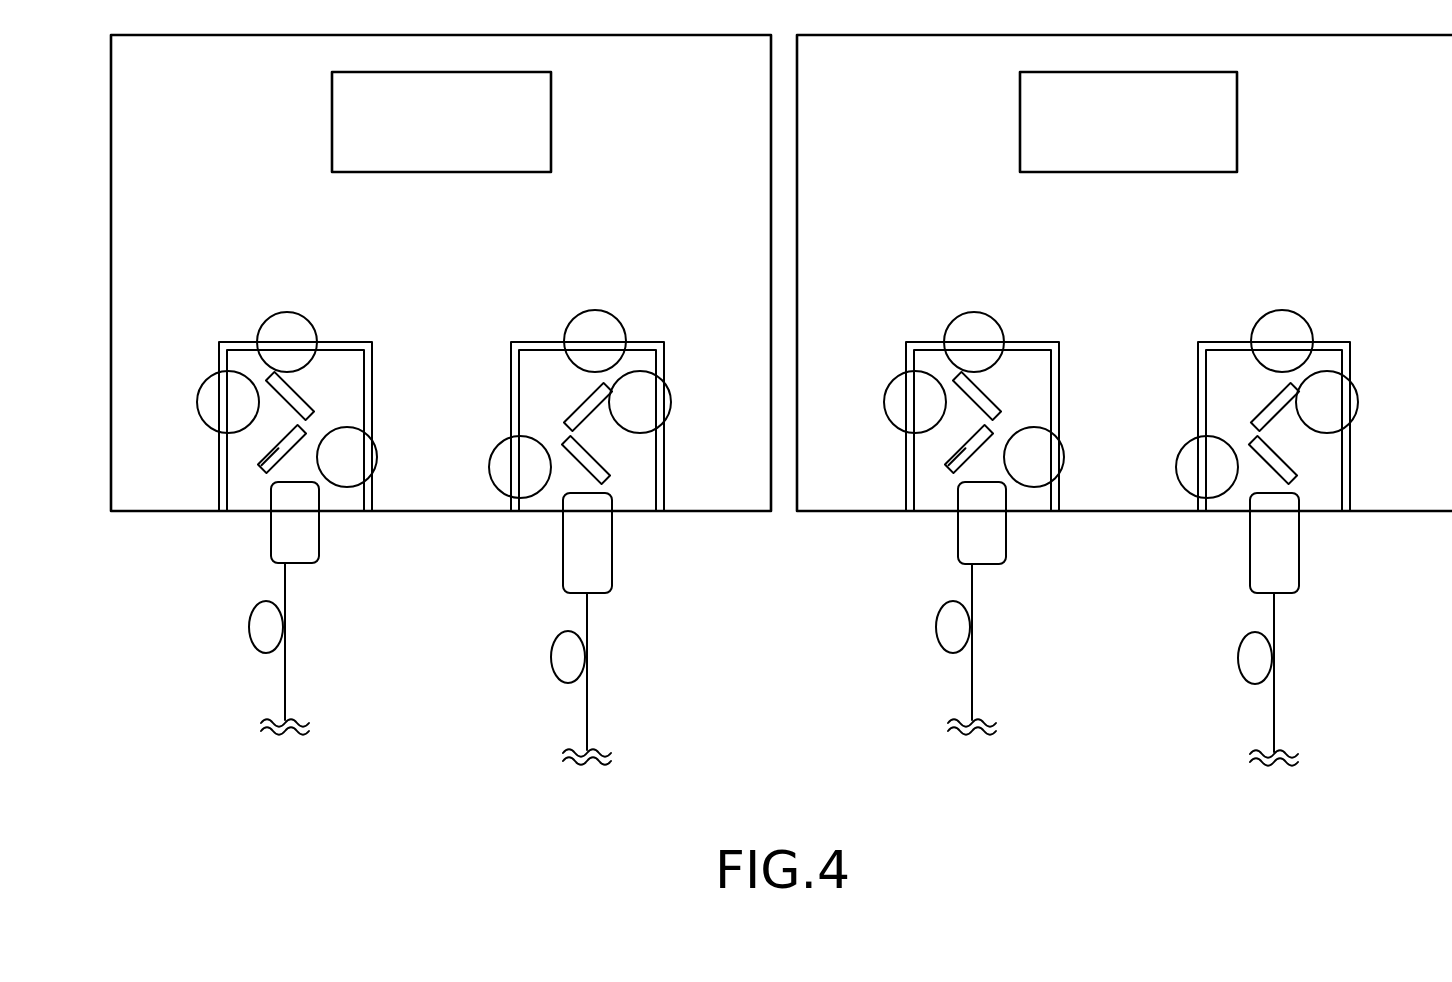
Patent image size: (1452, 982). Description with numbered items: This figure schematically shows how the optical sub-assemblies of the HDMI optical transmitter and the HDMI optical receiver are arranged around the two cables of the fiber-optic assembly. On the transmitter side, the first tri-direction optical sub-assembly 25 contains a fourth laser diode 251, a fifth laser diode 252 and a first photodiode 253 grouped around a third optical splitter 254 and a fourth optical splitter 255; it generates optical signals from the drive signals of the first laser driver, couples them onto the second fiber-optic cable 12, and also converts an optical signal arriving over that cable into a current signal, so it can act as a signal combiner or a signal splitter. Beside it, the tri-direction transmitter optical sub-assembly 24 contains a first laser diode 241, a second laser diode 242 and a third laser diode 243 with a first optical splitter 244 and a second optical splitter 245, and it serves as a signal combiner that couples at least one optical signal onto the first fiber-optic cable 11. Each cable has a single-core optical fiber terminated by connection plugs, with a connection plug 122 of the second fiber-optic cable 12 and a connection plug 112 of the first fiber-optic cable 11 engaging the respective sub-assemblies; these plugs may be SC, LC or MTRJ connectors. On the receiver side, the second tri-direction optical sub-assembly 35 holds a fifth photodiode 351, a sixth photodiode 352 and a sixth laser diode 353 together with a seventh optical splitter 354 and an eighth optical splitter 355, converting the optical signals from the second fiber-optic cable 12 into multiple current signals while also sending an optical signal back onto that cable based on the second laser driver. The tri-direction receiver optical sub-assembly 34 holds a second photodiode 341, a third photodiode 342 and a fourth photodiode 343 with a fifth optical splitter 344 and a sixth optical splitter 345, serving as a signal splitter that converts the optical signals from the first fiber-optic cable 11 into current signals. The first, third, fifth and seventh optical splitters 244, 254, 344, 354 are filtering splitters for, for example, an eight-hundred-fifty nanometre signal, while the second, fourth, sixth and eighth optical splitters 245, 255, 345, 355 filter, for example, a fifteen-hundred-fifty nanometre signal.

The first tri-direction optical sub-assembly 25 is at (209, 321).
The fourth laser diode 251 is at (308, 321).
The fifth laser diode 252 is at (368, 436).
The first photodiode 253 is at (198, 402).
The third optical splitter 254 is at (267, 465).
The fourth optical splitter 255 is at (288, 395).
The tri-direction transmitter optical sub-assembly 24 is at (672, 316).
The first laser diode 241 is at (672, 400).
The second laser diode 242 is at (495, 483).
The third laser diode 243 is at (615, 312).
The first optical splitter 244 is at (585, 458).
The second optical splitter 245 is at (585, 407).
The second tri-direction optical sub-assembly 35 is at (906, 317).
The fifth photodiode 351 is at (997, 317).
The sixth photodiode 352 is at (1063, 453).
The sixth laser diode 353 is at (897, 375).
The seventh optical splitter 354 is at (948, 466).
The eighth optical splitter 355 is at (977, 395).
The tri-direction receiver optical sub-assembly 34 is at (1347, 310).
The second photodiode 341 is at (1356, 388).
The third photodiode 342 is at (1185, 489).
The fourth photodiode 343 is at (1275, 313).
The fifth optical splitter 344 is at (1277, 453).
The sixth optical splitter 345 is at (1273, 407).
The connection plug 122 is at (295, 522).
The connection plug 112 is at (587, 542).
The second fiber-optic cable 12 is at (285, 673).
The first fiber-optic cable 11 is at (587, 620).